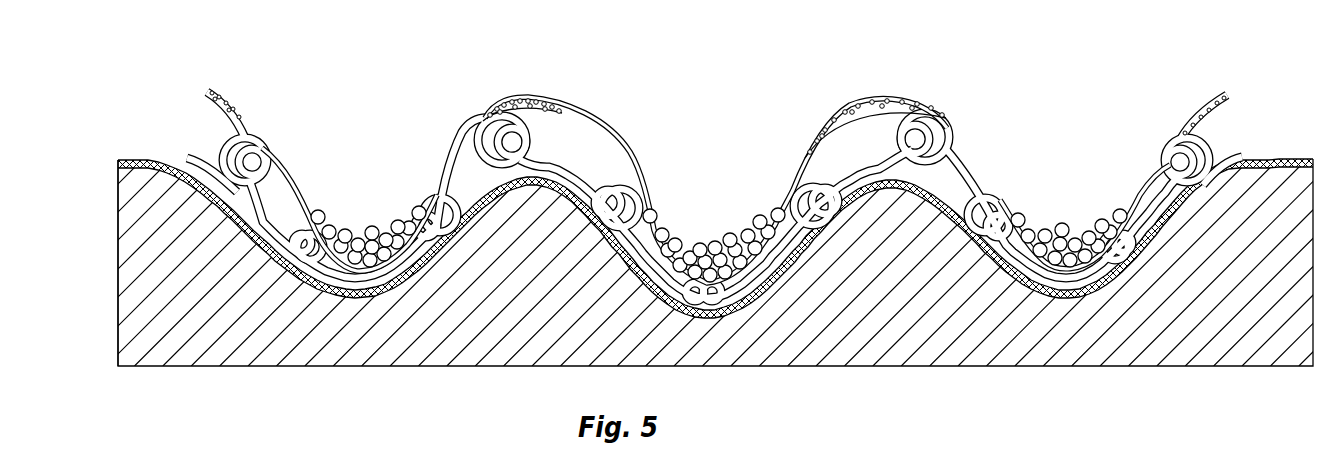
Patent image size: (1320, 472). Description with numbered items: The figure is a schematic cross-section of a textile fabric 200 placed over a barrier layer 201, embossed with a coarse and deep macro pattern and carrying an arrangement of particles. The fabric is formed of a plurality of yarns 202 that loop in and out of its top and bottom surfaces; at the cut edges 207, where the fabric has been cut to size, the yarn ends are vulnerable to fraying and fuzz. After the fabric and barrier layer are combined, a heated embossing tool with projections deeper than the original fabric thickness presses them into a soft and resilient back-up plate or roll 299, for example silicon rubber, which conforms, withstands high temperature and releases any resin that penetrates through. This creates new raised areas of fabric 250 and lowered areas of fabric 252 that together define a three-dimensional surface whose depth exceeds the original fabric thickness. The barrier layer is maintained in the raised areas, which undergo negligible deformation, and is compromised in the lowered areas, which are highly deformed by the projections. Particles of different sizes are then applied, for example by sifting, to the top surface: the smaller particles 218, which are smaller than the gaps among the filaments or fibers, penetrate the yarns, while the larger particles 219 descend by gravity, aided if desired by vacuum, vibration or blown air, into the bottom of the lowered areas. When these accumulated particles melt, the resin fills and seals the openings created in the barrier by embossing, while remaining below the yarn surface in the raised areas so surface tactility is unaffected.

The textile fabric 200 is at (216, 84).
The barrier layer 201 is at (116, 163).
The yarns 202 is at (258, 115).
The cut edges 207 is at (188, 157).
The particles 218 is at (496, 105).
The particles 219 is at (357, 243).
The raised areas of fabric 250 is at (552, 97).
The lowered areas of fabric 252 is at (357, 296).
The back-up plate or roll 299 is at (1238, 358).